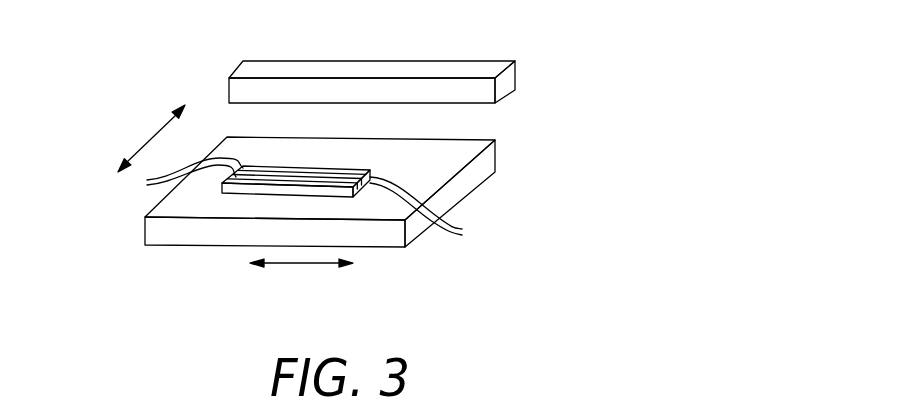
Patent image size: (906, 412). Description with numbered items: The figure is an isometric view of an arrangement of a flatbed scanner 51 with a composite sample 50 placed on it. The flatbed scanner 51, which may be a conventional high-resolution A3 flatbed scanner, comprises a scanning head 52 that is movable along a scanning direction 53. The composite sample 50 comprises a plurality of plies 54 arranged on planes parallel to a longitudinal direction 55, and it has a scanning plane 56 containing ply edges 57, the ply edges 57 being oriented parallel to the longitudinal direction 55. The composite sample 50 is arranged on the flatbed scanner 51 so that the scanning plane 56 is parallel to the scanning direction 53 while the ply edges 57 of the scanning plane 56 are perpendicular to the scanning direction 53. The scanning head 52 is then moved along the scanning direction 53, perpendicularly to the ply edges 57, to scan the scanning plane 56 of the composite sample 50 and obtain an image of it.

The composite sample 50 is at (237, 191).
The flatbed scanner 51 is at (400, 166).
The scanning head 52 is at (513, 78).
The scanning direction 53 is at (145, 139).
The plies 54 is at (432, 214).
The longitudinal direction 55 is at (307, 265).
The scanning plane 56 is at (308, 158).
The ply edges 57 is at (181, 179).